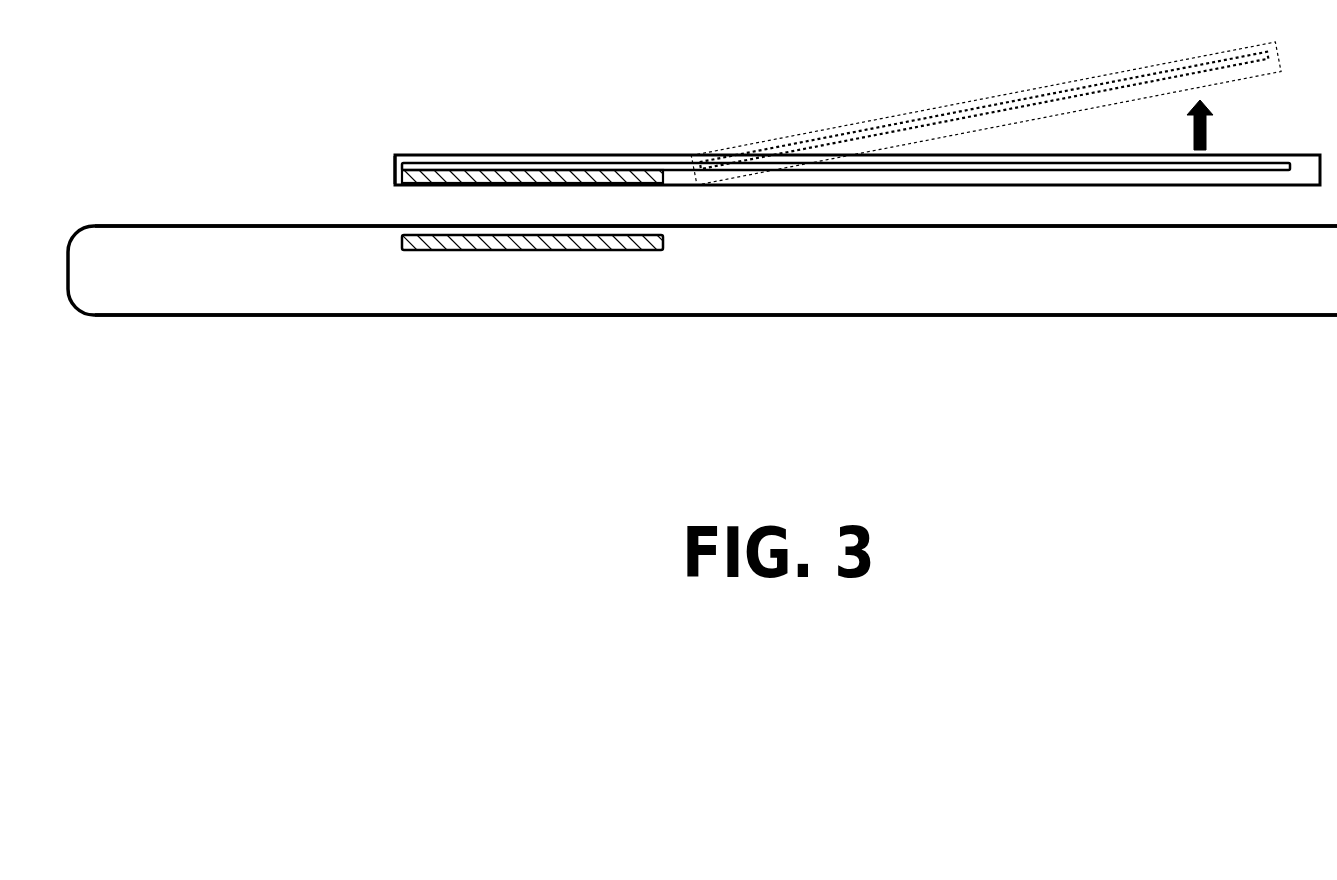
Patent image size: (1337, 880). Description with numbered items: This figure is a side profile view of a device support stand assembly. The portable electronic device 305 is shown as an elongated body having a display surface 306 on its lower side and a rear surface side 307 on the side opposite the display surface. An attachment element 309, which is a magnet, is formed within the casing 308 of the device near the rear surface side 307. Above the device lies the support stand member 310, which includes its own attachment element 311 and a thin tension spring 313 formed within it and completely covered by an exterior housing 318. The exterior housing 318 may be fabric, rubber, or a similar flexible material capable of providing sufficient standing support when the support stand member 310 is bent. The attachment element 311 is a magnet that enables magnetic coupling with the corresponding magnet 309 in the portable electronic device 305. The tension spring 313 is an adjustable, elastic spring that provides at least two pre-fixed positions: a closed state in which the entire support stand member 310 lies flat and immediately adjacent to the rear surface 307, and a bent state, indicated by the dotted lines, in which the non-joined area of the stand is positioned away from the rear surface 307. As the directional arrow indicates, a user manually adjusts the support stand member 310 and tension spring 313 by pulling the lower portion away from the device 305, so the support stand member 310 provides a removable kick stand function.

The portable electronic device 305 is at (367, 297).
The display surface 306 is at (235, 317).
The rear surface side 307 is at (230, 222).
The casing 308 is at (593, 315).
The attachment element 309 is at (648, 247).
The support stand member 310 is at (500, 142).
The attachment element 311 is at (652, 178).
The tension spring 313 is at (633, 167).
The exterior housing 318 is at (394, 170).